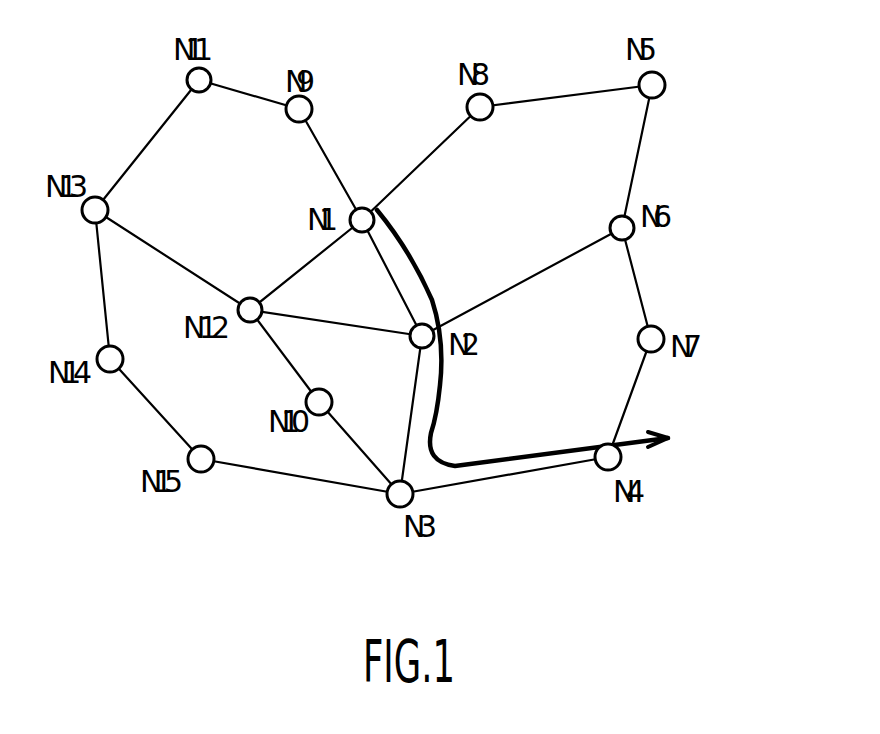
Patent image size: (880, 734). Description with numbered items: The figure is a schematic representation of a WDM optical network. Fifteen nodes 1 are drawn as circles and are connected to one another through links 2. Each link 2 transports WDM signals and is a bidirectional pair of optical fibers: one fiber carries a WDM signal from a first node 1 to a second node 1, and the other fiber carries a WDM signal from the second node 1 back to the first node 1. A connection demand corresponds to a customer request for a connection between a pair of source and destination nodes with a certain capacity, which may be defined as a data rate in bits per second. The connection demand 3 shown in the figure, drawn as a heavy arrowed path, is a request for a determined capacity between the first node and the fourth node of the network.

The node 1 is at (667, 82).
The link 2 is at (556, 92).
The connection demand 3 is at (637, 432).